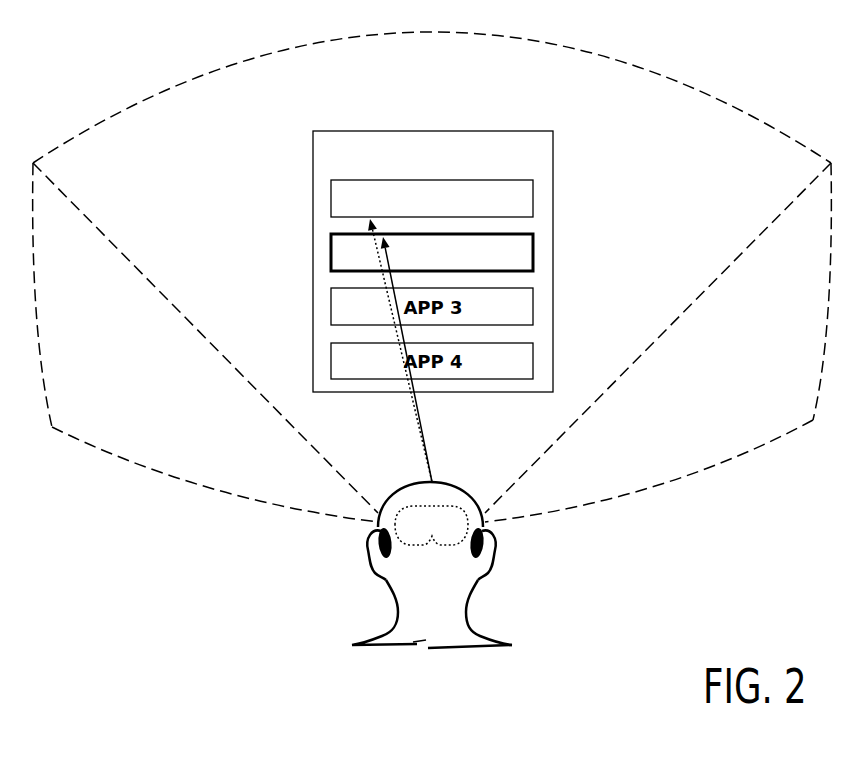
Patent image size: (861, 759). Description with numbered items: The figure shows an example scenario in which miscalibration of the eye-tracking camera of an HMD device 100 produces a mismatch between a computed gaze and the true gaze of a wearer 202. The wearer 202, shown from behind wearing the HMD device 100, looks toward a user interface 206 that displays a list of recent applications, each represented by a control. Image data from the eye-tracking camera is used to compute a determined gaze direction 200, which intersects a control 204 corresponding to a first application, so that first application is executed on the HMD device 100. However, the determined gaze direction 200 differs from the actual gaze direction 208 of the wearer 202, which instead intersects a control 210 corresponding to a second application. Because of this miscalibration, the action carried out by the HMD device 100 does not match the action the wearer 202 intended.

The HMD device 100 is at (485, 533).
The determined gaze direction 200 is at (377, 256).
The wearer 202 is at (512, 645).
The control 204 is at (533, 197).
The user interface 206 is at (313, 131).
The actual gaze direction 208 is at (392, 314).
The control 210 is at (533, 253).